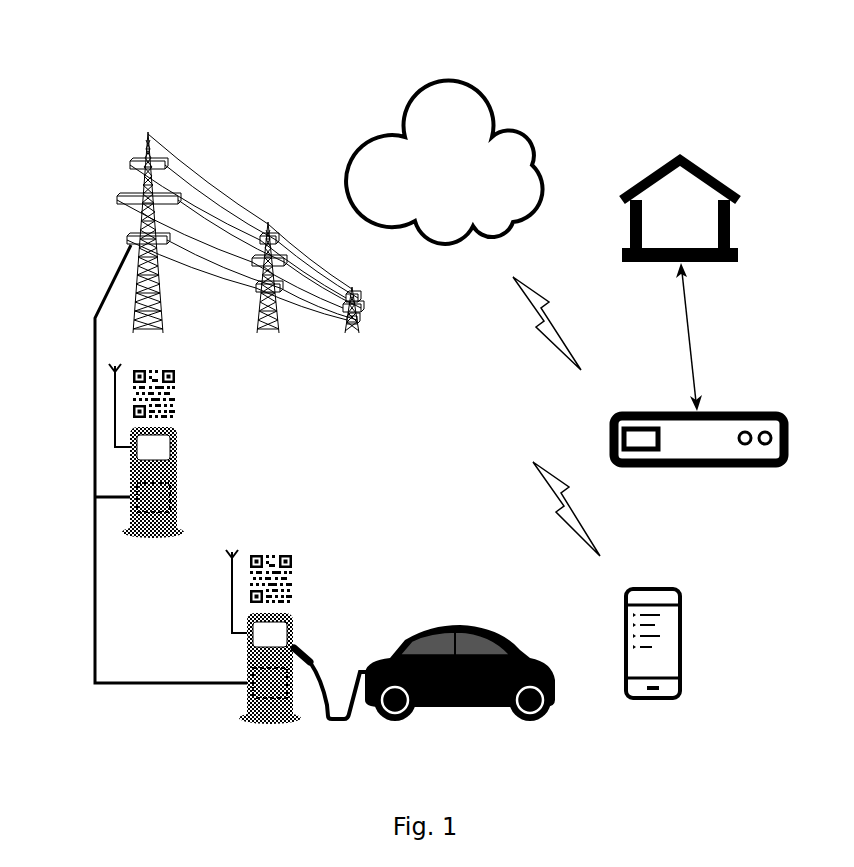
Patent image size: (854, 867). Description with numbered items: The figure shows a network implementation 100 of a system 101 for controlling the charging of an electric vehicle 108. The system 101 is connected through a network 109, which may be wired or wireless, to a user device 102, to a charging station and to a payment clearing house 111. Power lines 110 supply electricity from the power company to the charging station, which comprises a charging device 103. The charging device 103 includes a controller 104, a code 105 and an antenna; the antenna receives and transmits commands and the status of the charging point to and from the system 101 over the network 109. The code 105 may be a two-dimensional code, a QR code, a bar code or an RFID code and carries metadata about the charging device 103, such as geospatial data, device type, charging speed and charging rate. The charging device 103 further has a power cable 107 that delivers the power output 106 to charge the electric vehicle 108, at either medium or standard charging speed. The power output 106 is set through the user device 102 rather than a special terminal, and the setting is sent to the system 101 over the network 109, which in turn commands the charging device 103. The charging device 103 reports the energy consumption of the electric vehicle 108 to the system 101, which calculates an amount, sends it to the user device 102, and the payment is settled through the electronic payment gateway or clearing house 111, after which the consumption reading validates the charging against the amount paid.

The network implementation 100 is at (412, 54).
The system 101 is at (699, 458).
The user device 102 is at (718, 643).
The charging device 103 is at (216, 637).
The controller 104 is at (253, 690).
The code 105 is at (285, 552).
The power output 106 is at (298, 645).
The power cable 107 is at (330, 680).
The electric vehicle 108 is at (482, 708).
The network 109 is at (473, 318).
The power line 110 is at (88, 411).
The payment clearing house 111 is at (692, 178).